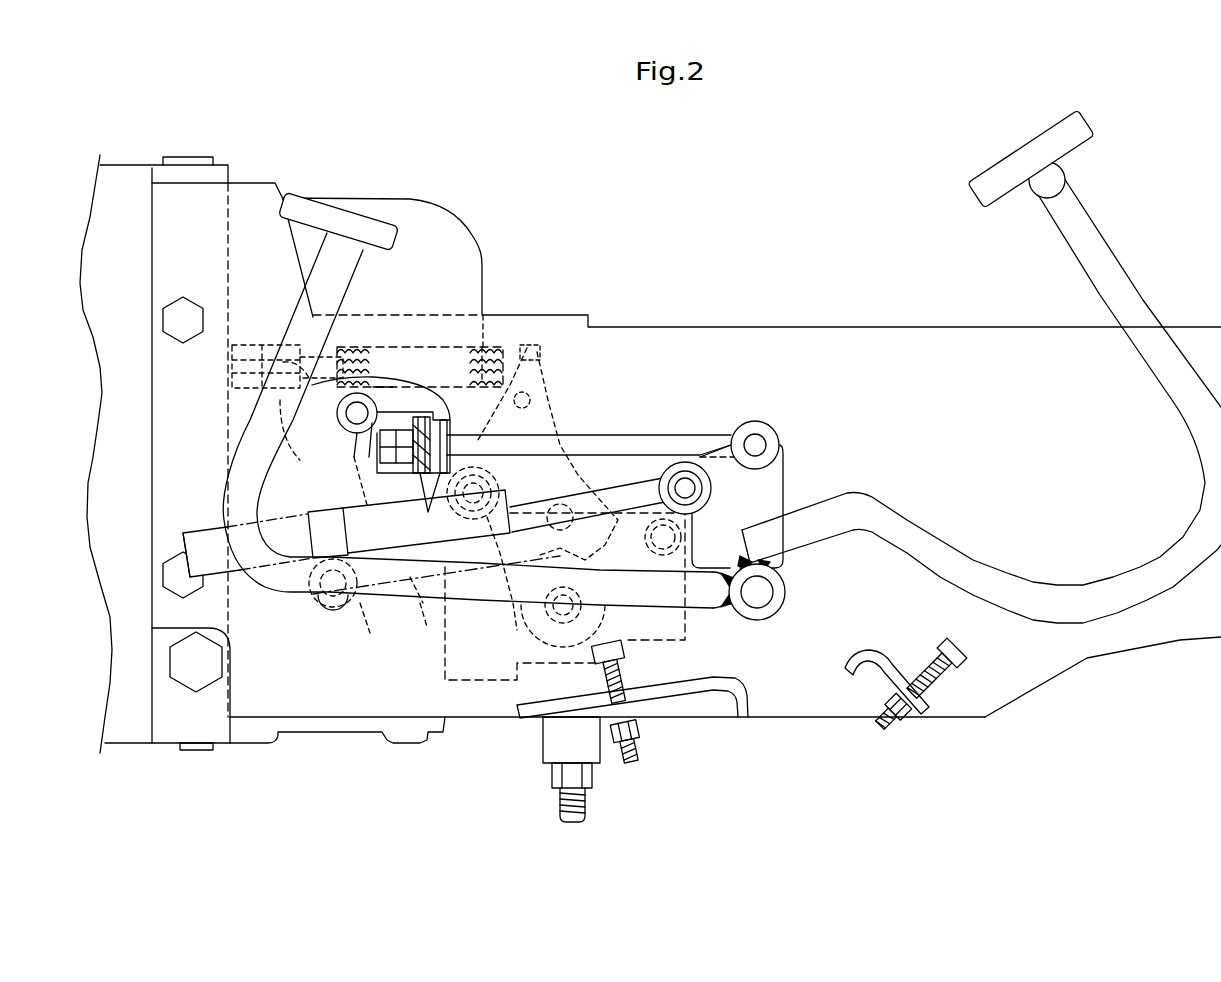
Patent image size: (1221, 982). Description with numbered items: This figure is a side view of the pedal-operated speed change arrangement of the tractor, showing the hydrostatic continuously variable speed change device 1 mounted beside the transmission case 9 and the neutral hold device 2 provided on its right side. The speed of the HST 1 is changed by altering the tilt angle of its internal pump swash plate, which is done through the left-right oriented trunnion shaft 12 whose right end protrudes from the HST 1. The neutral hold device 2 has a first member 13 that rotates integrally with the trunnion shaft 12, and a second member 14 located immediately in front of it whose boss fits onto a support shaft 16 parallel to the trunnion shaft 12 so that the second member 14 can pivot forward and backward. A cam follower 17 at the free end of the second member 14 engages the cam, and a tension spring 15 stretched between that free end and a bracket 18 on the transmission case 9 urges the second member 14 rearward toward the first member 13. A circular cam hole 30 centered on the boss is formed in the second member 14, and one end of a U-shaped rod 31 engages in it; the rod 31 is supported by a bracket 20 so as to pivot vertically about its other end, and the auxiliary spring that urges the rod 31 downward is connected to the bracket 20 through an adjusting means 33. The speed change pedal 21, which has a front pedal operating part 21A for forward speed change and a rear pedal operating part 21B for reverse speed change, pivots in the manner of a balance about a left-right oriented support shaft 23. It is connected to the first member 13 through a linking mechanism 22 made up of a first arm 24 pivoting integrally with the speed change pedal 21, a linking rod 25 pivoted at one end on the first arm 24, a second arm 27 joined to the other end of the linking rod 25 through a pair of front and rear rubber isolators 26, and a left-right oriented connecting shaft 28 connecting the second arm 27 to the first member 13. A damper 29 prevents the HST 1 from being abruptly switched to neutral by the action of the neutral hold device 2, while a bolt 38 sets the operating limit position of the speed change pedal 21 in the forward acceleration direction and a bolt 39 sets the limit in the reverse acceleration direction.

The hydrostatic continuously variable speed change device (HST) 1 is at (327, 733).
The neutral hold device 2 is at (553, 362).
The transmission case 9 is at (120, 745).
The trunnion shaft 12 is at (353, 587).
The first member 13 is at (403, 580).
The second member 14 is at (540, 408).
The spring 15 is at (493, 345).
The support shaft 16 is at (513, 620).
The cam follower 17 is at (510, 533).
The bracket 18 is at (280, 345).
The bracket 20 is at (687, 630).
The speed change pedal 21 is at (1090, 208).
The front pedal operating part 21A is at (1000, 163).
The rear pedal operating part 21B is at (313, 198).
The linking mechanism 22 is at (780, 420).
The support shaft 23 is at (770, 595).
The first arm 24 is at (780, 488).
The linking rod 25 is at (683, 433).
The rubber isolators 26 is at (346, 533).
The second arm 27 is at (415, 435).
The connecting shaft 28 is at (357, 413).
The damper 29 is at (212, 533).
The cam hole 30 is at (563, 488).
The rod 31 is at (577, 552).
The adjusting means 33 is at (547, 782).
The bolt 38 is at (960, 650).
The bolt 39 is at (620, 647).